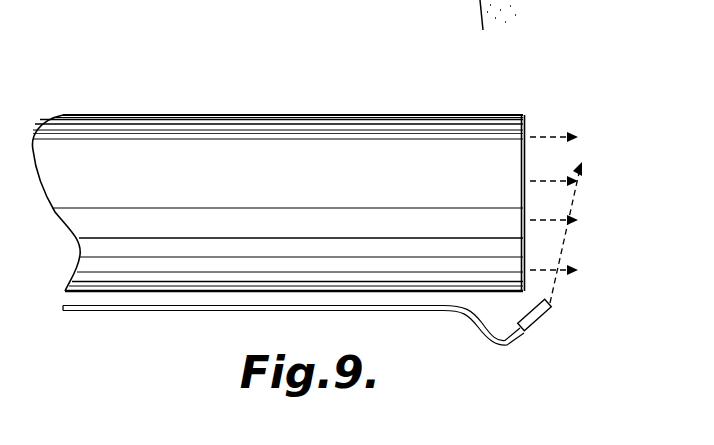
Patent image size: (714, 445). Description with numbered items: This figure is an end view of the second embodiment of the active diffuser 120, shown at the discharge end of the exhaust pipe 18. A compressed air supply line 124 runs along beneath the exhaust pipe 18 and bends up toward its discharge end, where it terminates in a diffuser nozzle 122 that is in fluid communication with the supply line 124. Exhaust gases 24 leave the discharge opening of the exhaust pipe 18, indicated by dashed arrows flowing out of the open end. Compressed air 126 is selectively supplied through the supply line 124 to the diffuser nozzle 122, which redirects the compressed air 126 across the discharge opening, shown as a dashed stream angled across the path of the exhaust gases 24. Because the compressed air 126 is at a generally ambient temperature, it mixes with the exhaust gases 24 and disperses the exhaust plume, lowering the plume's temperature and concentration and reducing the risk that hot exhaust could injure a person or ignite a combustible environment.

The exhaust pipe 18 is at (295, 115).
The exhaust gases 24 is at (553, 135).
The compressed air 126 is at (573, 198).
The compressed air supply line 124 is at (74, 311).
The diffuser nozzle 122 is at (540, 318).
The diffuser 120 is at (517, 350).